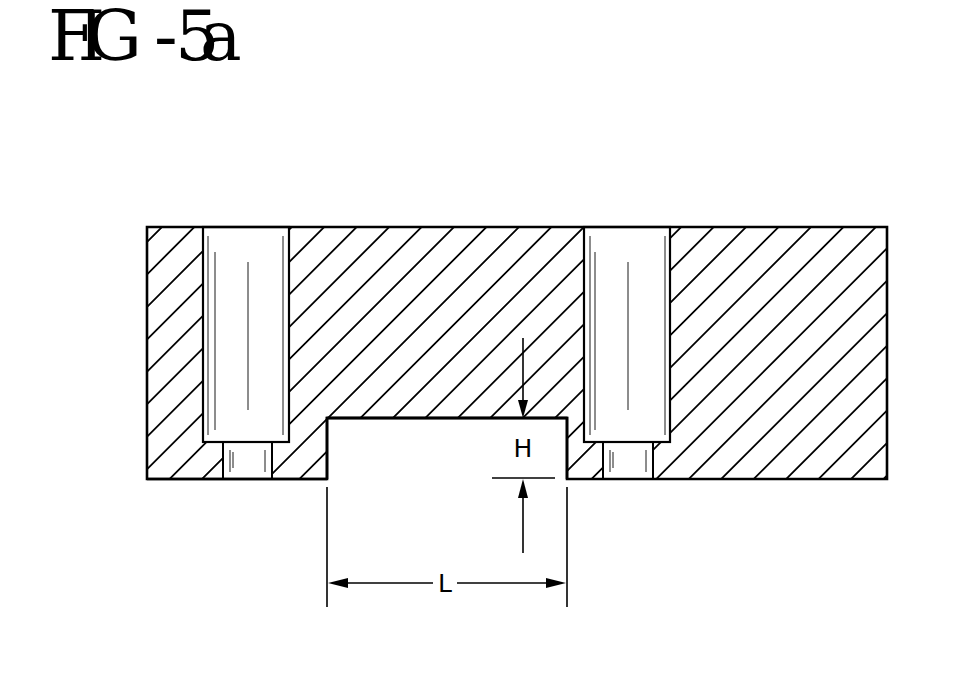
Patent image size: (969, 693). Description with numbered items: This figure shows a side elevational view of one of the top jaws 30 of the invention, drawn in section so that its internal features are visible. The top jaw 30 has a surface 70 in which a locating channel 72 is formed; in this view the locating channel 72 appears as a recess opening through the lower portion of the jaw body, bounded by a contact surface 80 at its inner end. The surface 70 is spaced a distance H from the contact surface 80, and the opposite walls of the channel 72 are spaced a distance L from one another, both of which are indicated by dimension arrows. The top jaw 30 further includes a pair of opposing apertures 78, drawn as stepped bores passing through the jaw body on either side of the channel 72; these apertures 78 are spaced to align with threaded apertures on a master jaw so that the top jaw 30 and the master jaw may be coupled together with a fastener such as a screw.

The top jaw 30 is at (114, 199).
The opposing apertures 78 is at (203, 338).
The contact surface 80 is at (412, 420).
The locating channel 72 is at (327, 446).
The surface 70 is at (197, 505).